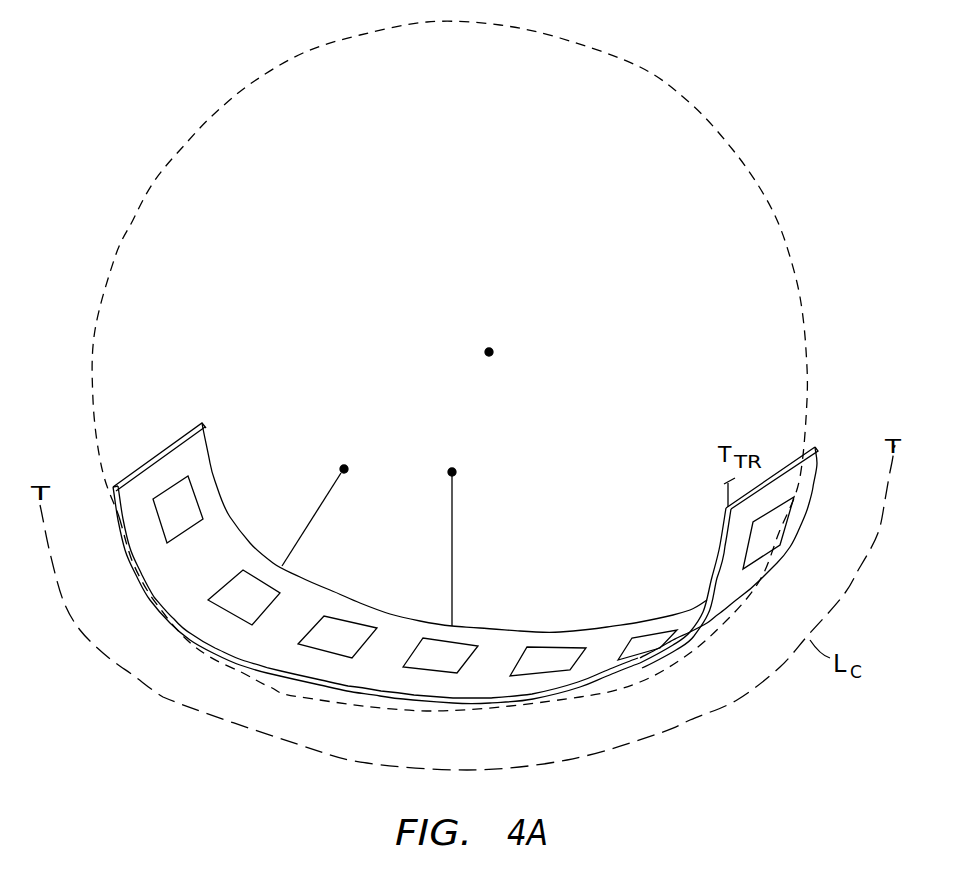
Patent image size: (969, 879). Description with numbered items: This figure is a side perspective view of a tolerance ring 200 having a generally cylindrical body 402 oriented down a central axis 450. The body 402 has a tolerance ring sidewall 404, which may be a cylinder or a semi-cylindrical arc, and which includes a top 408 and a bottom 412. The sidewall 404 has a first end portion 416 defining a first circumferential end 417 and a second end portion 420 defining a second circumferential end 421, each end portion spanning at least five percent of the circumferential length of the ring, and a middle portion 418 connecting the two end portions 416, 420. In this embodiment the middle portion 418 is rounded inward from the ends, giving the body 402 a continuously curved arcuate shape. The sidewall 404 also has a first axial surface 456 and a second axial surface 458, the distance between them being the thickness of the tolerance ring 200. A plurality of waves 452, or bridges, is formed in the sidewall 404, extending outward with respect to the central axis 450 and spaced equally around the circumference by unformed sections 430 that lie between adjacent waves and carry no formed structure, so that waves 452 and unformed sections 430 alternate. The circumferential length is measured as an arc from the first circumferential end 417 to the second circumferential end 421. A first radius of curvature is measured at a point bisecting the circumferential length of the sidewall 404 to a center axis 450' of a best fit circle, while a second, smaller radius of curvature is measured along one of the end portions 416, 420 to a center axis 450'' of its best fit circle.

The tolerance ring 200 is at (835, 372).
The generally cylindrical body 402 is at (213, 650).
The tolerance ring sidewall 404 is at (598, 684).
The top 408 is at (728, 582).
The bottom 412 is at (794, 537).
The first end portion 416 is at (812, 503).
The first circumferential end 417 is at (832, 432).
The middle portion 418 is at (413, 701).
The second end portion 420 is at (112, 497).
The second circumferential end 421 is at (112, 484).
The unformed sections 430 is at (297, 610).
The central axis 450 is at (529, 372).
The center axis for first radius of curvature 450' is at (493, 533).
The center axis for second radius of curvature 450'' is at (336, 487).
The waves 452 is at (540, 656).
The first axial surface 456 is at (718, 550).
The second axial surface 458 is at (709, 617).